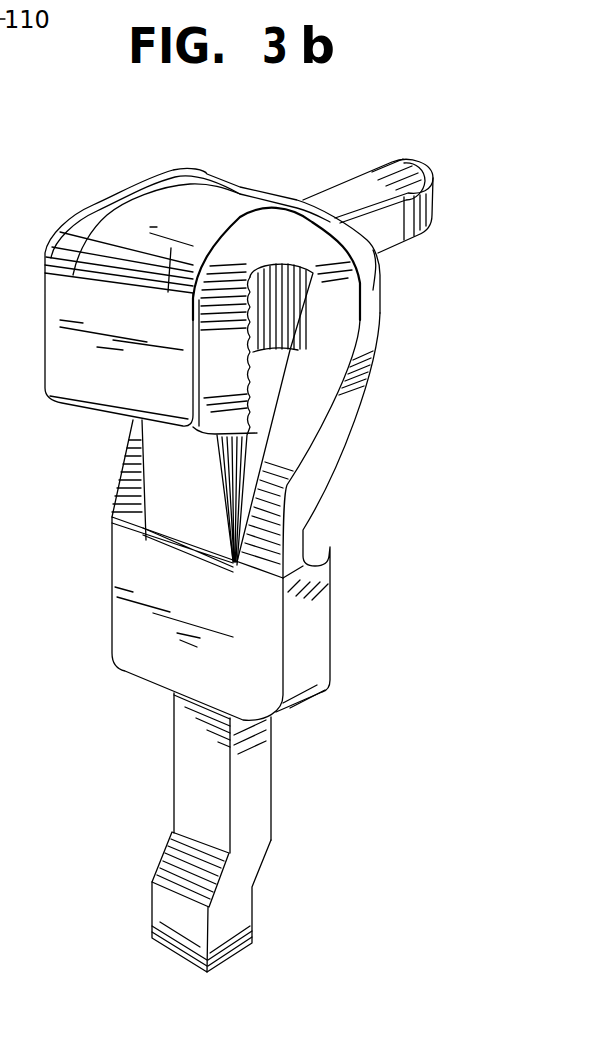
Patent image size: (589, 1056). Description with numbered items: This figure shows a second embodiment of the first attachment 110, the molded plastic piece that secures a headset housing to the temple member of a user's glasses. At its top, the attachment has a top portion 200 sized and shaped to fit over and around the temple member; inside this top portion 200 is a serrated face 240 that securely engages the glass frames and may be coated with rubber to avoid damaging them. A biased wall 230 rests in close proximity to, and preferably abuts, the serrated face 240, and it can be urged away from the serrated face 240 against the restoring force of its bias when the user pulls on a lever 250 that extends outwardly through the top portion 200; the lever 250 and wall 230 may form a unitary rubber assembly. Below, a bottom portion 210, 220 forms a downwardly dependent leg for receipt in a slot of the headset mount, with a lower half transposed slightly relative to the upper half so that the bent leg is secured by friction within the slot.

The first attachment 110 is at (319, 458).
The top portion 200 is at (157, 205).
The lever 250 is at (362, 185).
The serrated face 240 is at (300, 365).
The biased wall 230 is at (180, 487).
The bottom portion 210 is at (253, 748).
The bottom portion 220 is at (152, 883).